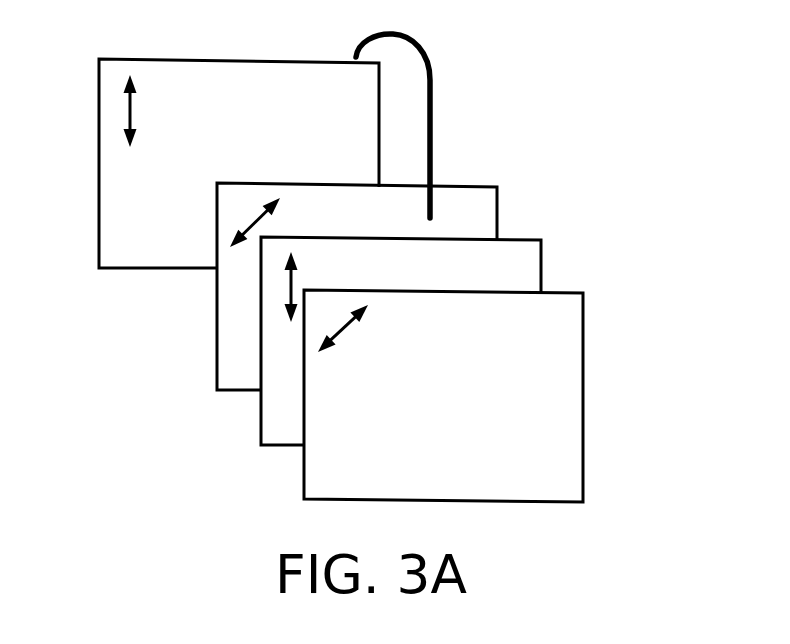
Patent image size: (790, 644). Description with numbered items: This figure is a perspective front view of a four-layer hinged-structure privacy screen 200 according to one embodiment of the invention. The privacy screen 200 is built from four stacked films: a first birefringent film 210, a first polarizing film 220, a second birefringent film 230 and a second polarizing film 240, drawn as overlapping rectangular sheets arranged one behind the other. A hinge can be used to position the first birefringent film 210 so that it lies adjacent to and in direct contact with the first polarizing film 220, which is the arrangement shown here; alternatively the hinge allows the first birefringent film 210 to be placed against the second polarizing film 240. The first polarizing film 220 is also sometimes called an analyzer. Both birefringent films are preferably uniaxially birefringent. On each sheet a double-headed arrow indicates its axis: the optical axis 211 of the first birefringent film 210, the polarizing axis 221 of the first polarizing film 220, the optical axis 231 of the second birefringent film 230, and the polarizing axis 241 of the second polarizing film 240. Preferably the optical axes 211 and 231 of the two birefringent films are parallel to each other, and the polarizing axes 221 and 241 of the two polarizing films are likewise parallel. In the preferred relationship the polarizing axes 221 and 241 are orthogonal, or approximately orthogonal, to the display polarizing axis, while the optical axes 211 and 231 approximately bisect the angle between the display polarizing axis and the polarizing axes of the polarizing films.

The privacy screen 200 is at (354, 278).
The first birefringent film 210 is at (99, 157).
The optical axis of the first birefringent film 211 is at (130, 110).
The first polarizing film 220 is at (217, 376).
The polarizing axis of the first polarizing film 221 is at (217, 217).
The second birefringent film 230 is at (261, 432).
The optical axis of the second birefringent film 231 is at (289, 285).
The second polarizing film 240 is at (304, 483).
The polarizing axis of the second polarizing film 241 is at (326, 328).